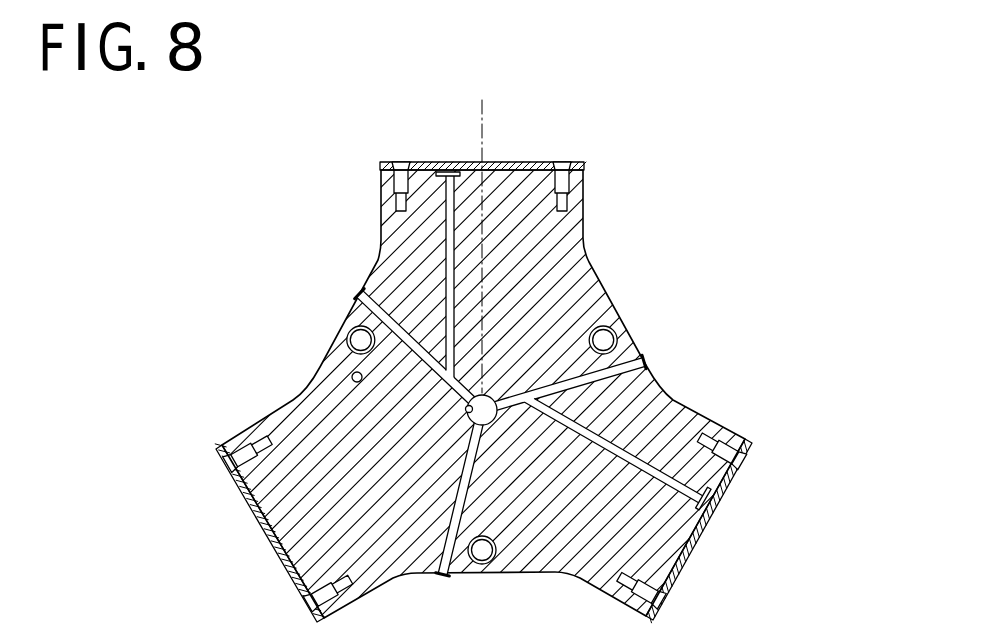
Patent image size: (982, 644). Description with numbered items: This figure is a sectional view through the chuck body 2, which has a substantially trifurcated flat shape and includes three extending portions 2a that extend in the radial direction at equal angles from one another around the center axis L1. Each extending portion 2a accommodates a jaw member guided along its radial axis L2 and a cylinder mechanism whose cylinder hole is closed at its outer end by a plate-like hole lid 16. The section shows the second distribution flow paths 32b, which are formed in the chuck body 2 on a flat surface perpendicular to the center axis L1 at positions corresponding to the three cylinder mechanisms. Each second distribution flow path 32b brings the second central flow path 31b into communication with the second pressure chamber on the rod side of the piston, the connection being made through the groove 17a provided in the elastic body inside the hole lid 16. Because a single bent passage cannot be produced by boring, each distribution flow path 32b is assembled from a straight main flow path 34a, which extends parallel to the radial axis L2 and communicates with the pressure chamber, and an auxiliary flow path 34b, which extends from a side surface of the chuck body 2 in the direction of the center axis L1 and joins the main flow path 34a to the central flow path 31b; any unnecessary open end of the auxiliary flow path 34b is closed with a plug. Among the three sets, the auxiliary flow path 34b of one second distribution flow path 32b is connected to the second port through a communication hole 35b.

The chuck body 2 is at (612, 292).
The extending portion 2a is at (583, 210).
The hole lid 16 is at (522, 162).
The groove 17a is at (447, 171).
The second central flow path 31b is at (470, 412).
The second distribution flow path 32b is at (521, 339).
The main flow path 34a is at (672, 402).
The auxiliary flow path 34b is at (645, 368).
The communication hole 35b is at (390, 320).
The center axis L1 is at (618, 345).
The radial axis L2 is at (486, 227).